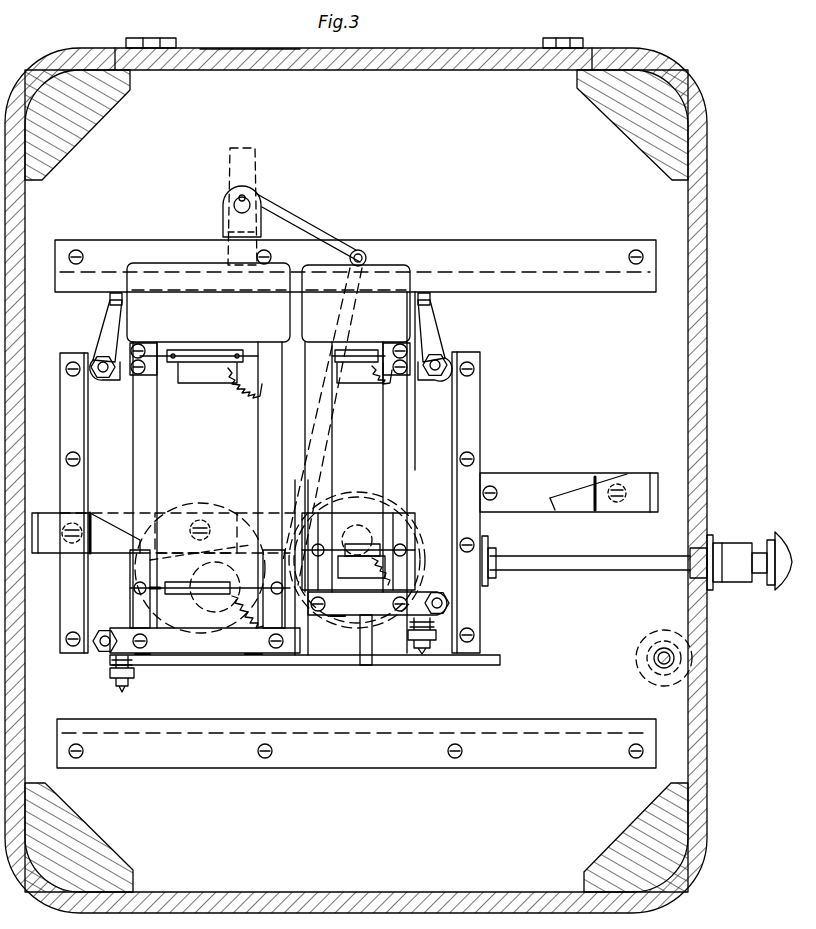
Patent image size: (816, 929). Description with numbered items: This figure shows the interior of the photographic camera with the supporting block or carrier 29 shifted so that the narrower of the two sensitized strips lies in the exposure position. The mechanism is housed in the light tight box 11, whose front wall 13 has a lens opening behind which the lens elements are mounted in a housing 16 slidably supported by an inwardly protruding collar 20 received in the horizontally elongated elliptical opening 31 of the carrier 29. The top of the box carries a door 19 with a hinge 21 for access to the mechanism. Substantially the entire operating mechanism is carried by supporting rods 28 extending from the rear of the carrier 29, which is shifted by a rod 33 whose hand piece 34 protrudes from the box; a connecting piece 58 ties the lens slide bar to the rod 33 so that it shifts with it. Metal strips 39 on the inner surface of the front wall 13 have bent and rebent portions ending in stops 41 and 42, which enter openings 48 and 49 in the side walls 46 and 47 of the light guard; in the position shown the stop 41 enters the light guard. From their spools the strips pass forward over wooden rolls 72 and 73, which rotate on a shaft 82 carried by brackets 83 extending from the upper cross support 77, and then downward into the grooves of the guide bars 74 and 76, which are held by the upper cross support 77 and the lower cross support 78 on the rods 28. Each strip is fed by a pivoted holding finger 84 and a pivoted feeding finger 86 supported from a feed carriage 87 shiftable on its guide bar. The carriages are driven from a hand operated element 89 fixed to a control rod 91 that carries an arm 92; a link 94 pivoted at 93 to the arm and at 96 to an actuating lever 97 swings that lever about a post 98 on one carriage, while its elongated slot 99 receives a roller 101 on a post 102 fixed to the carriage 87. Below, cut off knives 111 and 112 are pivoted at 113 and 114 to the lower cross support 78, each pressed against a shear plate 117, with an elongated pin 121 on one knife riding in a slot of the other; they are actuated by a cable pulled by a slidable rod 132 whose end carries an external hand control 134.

The light tight box 11 is at (708, 497).
The front wall 13 is at (630, 437).
The housing 16 is at (416, 557).
The door 19 is at (238, 55).
The collar 20 is at (395, 545).
The hinge 21 is at (158, 38).
The supporting rods 28 is at (104, 360).
The carrier 29 is at (488, 666).
The elliptical opening 31 is at (228, 504).
The rod 33 is at (640, 562).
The hand piece 34 is at (780, 590).
The metal strips 39 is at (170, 505).
The stop 41 is at (112, 530).
The stop 42 is at (560, 510).
The side wall 46 is at (92, 422).
The side wall 47 is at (452, 424).
The opening 48 is at (92, 513).
The opening 49 is at (484, 473).
The connecting piece 58 is at (740, 558).
The roll 72 is at (136, 278).
The roll 73 is at (400, 272).
The guide bar 74 is at (262, 442).
The guide bar 76 is at (326, 480).
The upper cross support 77 is at (410, 380).
The lower cross support 78 is at (296, 656).
The shaft 82 is at (432, 299).
The brackets 83 is at (106, 332).
The holding finger 84 is at (214, 375).
The feeding finger 86 is at (235, 620).
The feed carriage 87 is at (130, 572).
The hand operated element 89 is at (262, 160).
The control rod 91 is at (250, 203).
The arm 92 is at (330, 238).
The pivot 93 is at (368, 252).
The link 94 is at (358, 318).
The pivot 96 is at (258, 536).
The actuating lever 97 is at (262, 552).
The post 98 is at (355, 545).
The elongated slot 99 is at (175, 582).
The roller 101 is at (218, 580).
The post 102 is at (215, 612).
The cut off knife 111 is at (245, 656).
The cut off knife 112 is at (348, 622).
The pivot 113 is at (118, 688).
The pivot 114 is at (421, 656).
The shear plate 117 is at (188, 656).
The elongated pin 121 is at (386, 640).
The rod 132 is at (654, 658).
The hand control 134 is at (644, 637).